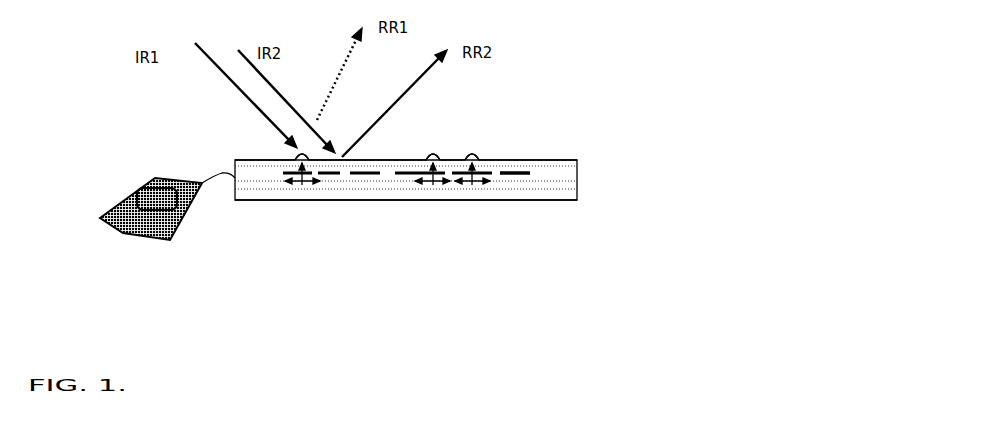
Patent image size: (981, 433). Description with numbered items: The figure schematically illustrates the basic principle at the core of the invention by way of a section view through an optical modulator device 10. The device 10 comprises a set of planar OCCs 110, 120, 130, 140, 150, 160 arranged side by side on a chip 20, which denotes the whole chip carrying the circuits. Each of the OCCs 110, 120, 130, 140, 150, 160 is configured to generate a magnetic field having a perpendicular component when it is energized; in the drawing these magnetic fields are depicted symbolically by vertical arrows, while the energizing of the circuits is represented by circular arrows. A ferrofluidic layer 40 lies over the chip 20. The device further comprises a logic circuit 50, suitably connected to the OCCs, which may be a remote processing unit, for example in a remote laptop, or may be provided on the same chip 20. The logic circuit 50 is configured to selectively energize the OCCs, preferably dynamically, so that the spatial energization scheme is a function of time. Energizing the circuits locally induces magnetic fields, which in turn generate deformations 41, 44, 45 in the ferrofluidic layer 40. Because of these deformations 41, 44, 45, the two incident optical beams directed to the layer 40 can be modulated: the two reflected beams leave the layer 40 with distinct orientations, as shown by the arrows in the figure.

The optical modulator device 10 is at (632, 170).
The chip 20 is at (577, 190).
The ferrofluidic layer 40 is at (552, 172).
The deformation 41 is at (299, 156).
The deformation 44 is at (437, 151).
The deformation 45 is at (477, 153).
The logic circuit 50 is at (153, 247).
The planar OCC 110 is at (290, 174).
The planar OCC 120 is at (348, 175).
The planar OCC 130 is at (398, 175).
The planar OCC 140 is at (418, 175).
The planar OCC 150 is at (487, 177).
The planar OCC 160 is at (530, 174).